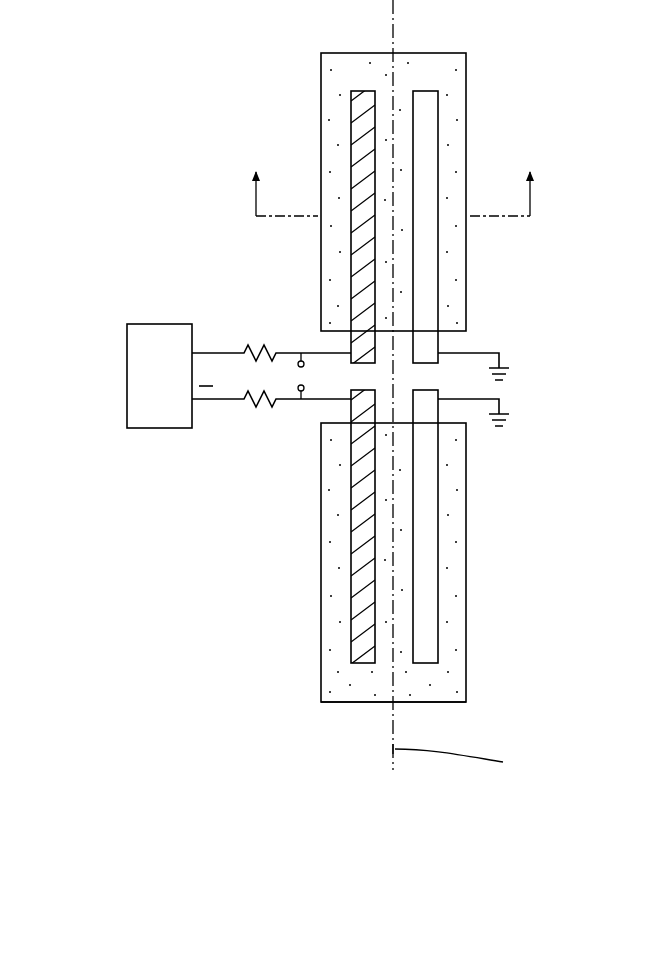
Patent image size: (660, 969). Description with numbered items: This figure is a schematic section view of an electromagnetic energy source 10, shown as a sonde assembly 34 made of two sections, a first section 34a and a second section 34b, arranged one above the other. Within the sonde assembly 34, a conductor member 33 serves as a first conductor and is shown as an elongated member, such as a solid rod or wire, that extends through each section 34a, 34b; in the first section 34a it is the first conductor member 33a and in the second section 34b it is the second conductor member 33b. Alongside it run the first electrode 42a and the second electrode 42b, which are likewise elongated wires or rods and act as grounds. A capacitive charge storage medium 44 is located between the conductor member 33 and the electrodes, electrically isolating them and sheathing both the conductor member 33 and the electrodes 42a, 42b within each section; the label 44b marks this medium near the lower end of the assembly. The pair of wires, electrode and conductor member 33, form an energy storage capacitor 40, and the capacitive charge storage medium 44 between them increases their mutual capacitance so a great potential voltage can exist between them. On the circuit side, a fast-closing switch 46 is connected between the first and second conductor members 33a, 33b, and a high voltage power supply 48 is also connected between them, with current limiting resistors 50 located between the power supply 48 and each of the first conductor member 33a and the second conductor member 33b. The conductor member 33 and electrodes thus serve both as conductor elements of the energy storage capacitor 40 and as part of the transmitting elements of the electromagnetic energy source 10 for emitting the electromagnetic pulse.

The electromagnetic energy source 10 is at (220, 150).
The conductor member 33 is at (397, 217).
The first conductor member 33a is at (370, 600).
The second conductor member 33b is at (350, 102).
The sonde assembly 34 is at (376, 209).
The first section 34a is at (503, 482).
The second section 34b is at (503, 135).
The energy storage capacitor 40 is at (389, 567).
The first electrode 42a is at (433, 577).
The second electrode 42b is at (438, 92).
The capacitive charge storage medium 44 is at (336, 491).
The insulating material end 44b is at (363, 727).
The fast-closing switch 46 is at (306, 372).
The high voltage power supply 48 is at (127, 350).
The current limiting resistors 50 is at (255, 405).